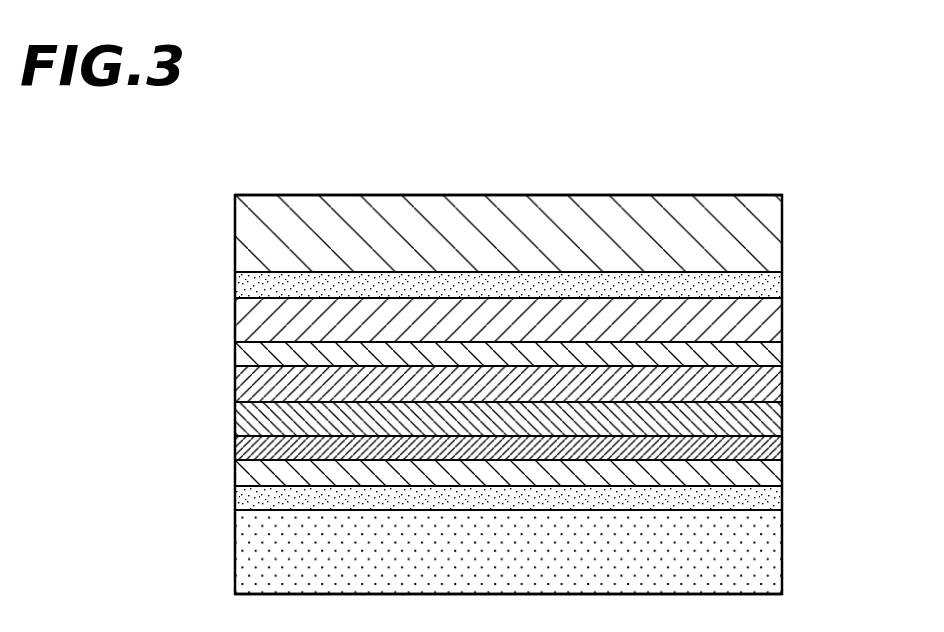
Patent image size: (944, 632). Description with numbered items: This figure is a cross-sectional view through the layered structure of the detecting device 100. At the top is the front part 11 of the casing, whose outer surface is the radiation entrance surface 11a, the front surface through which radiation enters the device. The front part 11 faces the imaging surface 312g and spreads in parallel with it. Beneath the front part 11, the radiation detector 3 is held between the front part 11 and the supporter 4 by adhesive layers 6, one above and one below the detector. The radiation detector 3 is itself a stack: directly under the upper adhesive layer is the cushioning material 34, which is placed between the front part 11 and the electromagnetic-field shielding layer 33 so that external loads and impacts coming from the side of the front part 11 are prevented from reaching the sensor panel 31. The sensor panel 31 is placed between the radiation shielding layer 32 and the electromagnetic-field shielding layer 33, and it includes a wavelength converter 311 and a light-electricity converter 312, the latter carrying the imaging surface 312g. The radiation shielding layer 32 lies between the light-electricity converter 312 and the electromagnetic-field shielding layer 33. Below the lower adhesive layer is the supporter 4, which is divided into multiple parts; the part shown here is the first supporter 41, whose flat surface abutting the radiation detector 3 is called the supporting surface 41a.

The detecting device 100 is at (507, 177).
The front part 11 is at (233, 243).
The radiation entrance surface 11a is at (782, 195).
The adhesive layer 6 is at (233, 283).
The radiation detector 3 is at (466, 378).
The cushioning material 34 is at (235, 321).
The electromagnetic-field shielding layer 33 is at (235, 355).
The sensor panel 31 is at (484, 391).
The wavelength converter 311 is at (235, 383).
The light-electricity converter 312 is at (233, 413).
The imaging surface 312g is at (782, 402).
The radiation shielding layer 32 is at (433, 435).
The supporter 4 is at (496, 528).
The first supporter 41 is at (508, 552).
The supporting surface 41a is at (782, 506).